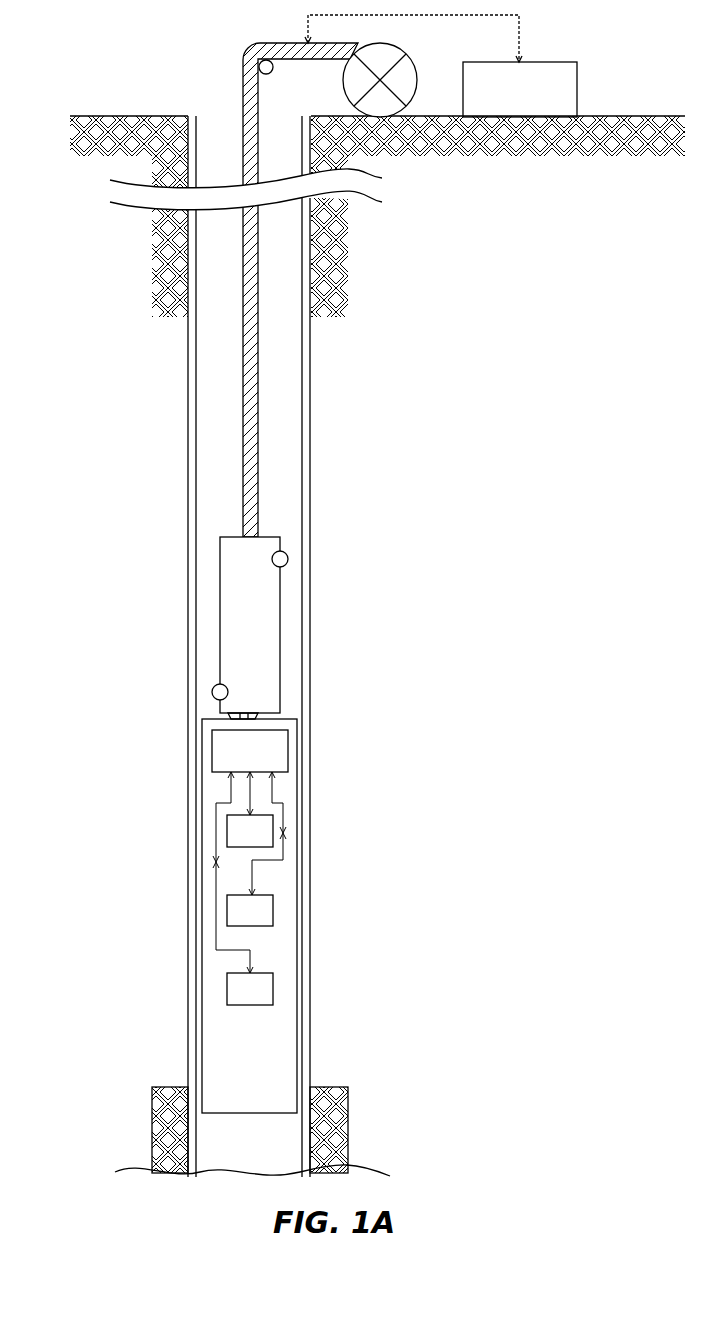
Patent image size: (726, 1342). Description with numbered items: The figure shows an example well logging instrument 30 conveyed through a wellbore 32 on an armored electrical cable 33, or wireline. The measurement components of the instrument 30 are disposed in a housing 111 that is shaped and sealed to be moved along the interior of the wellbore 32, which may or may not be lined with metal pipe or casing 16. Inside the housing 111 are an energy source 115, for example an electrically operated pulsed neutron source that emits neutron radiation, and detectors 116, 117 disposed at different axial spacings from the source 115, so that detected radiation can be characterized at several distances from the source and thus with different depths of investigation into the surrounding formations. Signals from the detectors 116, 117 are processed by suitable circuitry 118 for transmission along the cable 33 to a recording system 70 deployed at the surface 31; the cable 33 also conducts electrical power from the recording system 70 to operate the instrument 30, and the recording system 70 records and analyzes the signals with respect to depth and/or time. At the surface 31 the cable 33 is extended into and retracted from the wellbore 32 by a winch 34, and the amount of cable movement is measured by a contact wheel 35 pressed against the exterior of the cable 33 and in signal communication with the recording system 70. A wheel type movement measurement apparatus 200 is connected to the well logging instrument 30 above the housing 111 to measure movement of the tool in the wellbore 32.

The casing 16 is at (188, 578).
The well logging instrument 30 is at (208, 906).
The surface 31 is at (110, 116).
The wellbore 32 is at (223, 120).
The armored electrical cable 33 is at (254, 48).
The winch 34 is at (387, 103).
The contact wheel 35 is at (270, 73).
The recording system 70 is at (577, 65).
The housing 111 is at (198, 1036).
The energy source 115 is at (267, 985).
The detector 116 is at (267, 908).
The detector 117 is at (234, 832).
The circuitry 118 is at (268, 748).
The wheel type movement measurement apparatus 200 is at (272, 543).